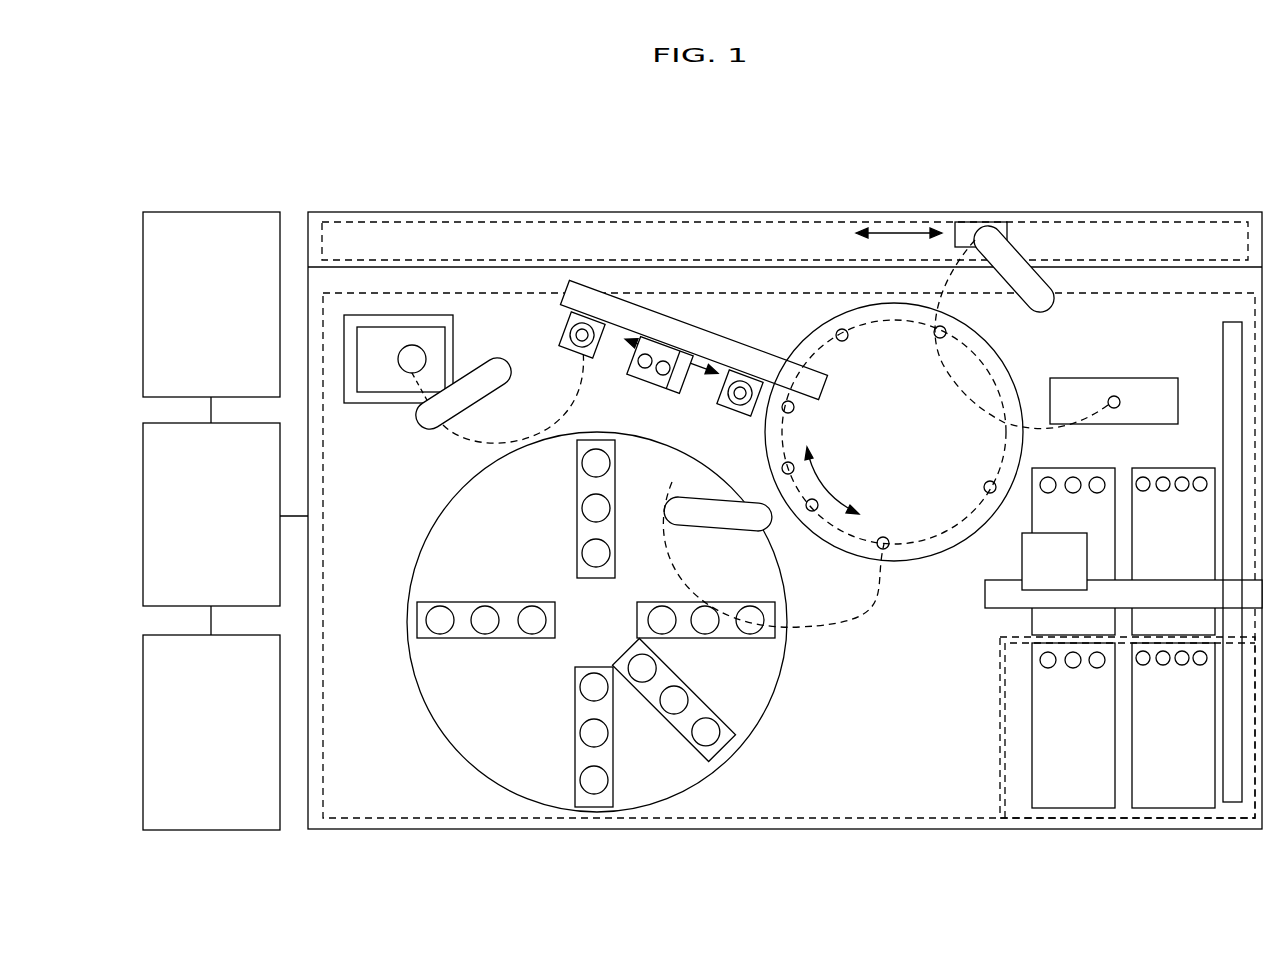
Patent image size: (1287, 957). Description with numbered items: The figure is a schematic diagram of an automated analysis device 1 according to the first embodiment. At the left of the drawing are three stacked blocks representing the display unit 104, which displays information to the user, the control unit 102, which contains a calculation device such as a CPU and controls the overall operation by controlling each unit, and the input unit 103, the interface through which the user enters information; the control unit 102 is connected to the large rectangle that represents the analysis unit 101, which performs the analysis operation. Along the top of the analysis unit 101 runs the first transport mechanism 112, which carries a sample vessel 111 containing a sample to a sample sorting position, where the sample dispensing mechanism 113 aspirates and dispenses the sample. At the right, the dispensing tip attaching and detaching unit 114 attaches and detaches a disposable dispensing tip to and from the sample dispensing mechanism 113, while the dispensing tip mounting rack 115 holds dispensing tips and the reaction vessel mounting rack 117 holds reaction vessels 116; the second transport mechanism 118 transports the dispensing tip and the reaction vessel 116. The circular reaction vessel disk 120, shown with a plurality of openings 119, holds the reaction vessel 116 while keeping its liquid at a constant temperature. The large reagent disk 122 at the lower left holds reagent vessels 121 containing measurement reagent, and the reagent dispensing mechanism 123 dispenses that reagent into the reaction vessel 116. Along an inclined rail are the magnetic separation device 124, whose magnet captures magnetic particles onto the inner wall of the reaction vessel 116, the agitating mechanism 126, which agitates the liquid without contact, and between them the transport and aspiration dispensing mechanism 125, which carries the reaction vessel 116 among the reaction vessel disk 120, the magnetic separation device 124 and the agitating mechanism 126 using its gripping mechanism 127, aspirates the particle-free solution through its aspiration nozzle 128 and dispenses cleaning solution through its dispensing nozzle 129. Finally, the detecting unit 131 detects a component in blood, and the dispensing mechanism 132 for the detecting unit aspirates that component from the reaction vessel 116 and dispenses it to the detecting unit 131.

The automated analysis device 1 is at (258, 173).
The analysis unit 101 is at (535, 830).
The control unit 102 is at (211, 514).
The input unit 103 is at (211, 732).
The display unit 104 is at (211, 304).
The sample vessel 111 is at (964, 222).
The first transport mechanism 112 is at (342, 231).
The sample dispensing mechanism 113 is at (1016, 230).
The dispensing tip attaching and detaching unit 114 is at (1116, 378).
The dispensing tip mounting rack 115 is at (1172, 792).
The reaction vessel 116 is at (1076, 471).
The reaction vessel mounting rack 117 is at (1073, 792).
The second transport mechanism 118 is at (1024, 571).
The openings 119 is at (848, 342).
The reaction vessel disk 120 is at (894, 432).
The reagent vessel 121 is at (594, 464).
The reagent disk 122 is at (476, 755).
The reagent dispensing mechanism 123 is at (777, 526).
The magnetic separation device 124 is at (568, 332).
The transport and aspiration dispensing mechanism 125 is at (660, 380).
The agitating mechanism 126 is at (742, 412).
The gripping mechanism 127 is at (684, 385).
The aspiration nozzle 128 is at (658, 374).
The dispensing nozzle 129 is at (640, 363).
The detecting unit 131 is at (380, 368).
The dispensing mechanism for the detecting unit 132 is at (487, 385).